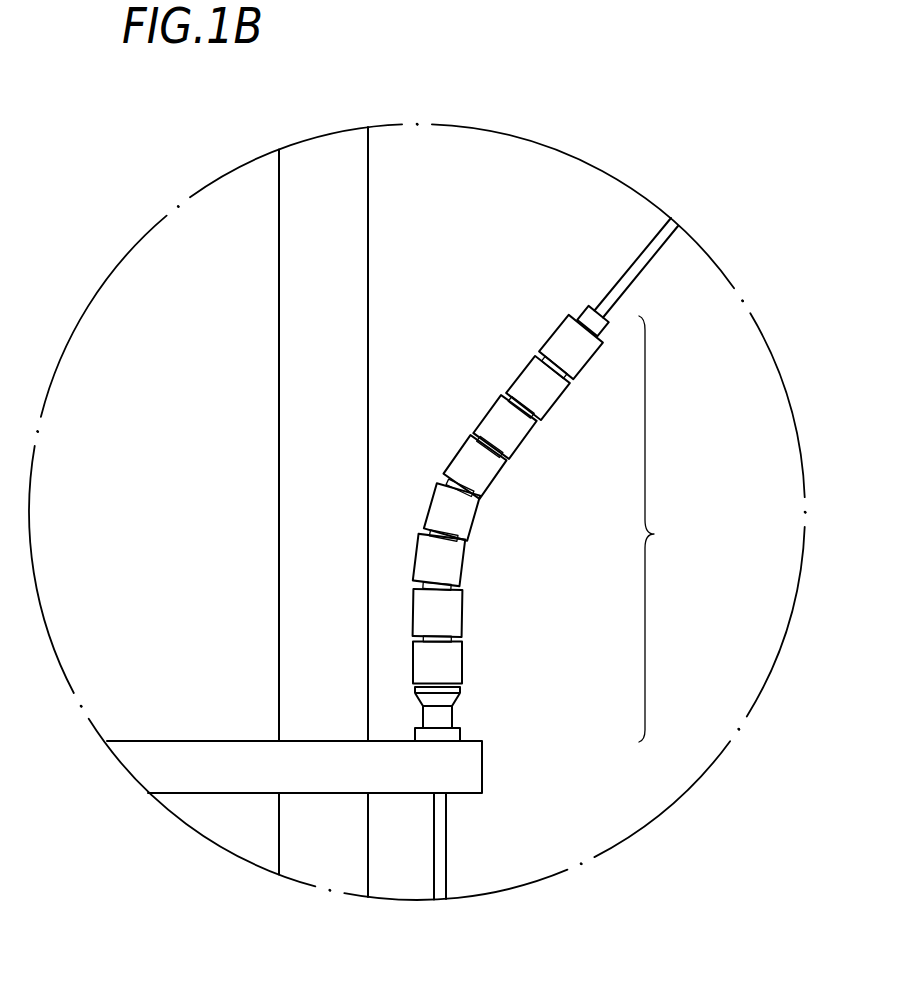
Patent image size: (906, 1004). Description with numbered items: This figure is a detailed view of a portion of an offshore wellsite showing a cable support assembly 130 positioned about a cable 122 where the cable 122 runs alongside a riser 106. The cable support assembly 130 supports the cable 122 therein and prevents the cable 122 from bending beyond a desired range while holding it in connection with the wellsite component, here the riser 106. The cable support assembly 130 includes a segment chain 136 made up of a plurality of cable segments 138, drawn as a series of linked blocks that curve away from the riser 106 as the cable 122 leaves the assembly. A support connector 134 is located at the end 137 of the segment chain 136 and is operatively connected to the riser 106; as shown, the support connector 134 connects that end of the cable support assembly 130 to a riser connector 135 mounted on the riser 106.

The riser 106 is at (285, 483).
The cable 122 is at (657, 264).
The cable support assembly 130 is at (511, 496).
The support connector 134 is at (447, 713).
The riser connector 135 is at (468, 780).
The segment chain 136 is at (654, 534).
The end of the segment chain 137 is at (450, 735).
The cable segments 138 is at (447, 567).